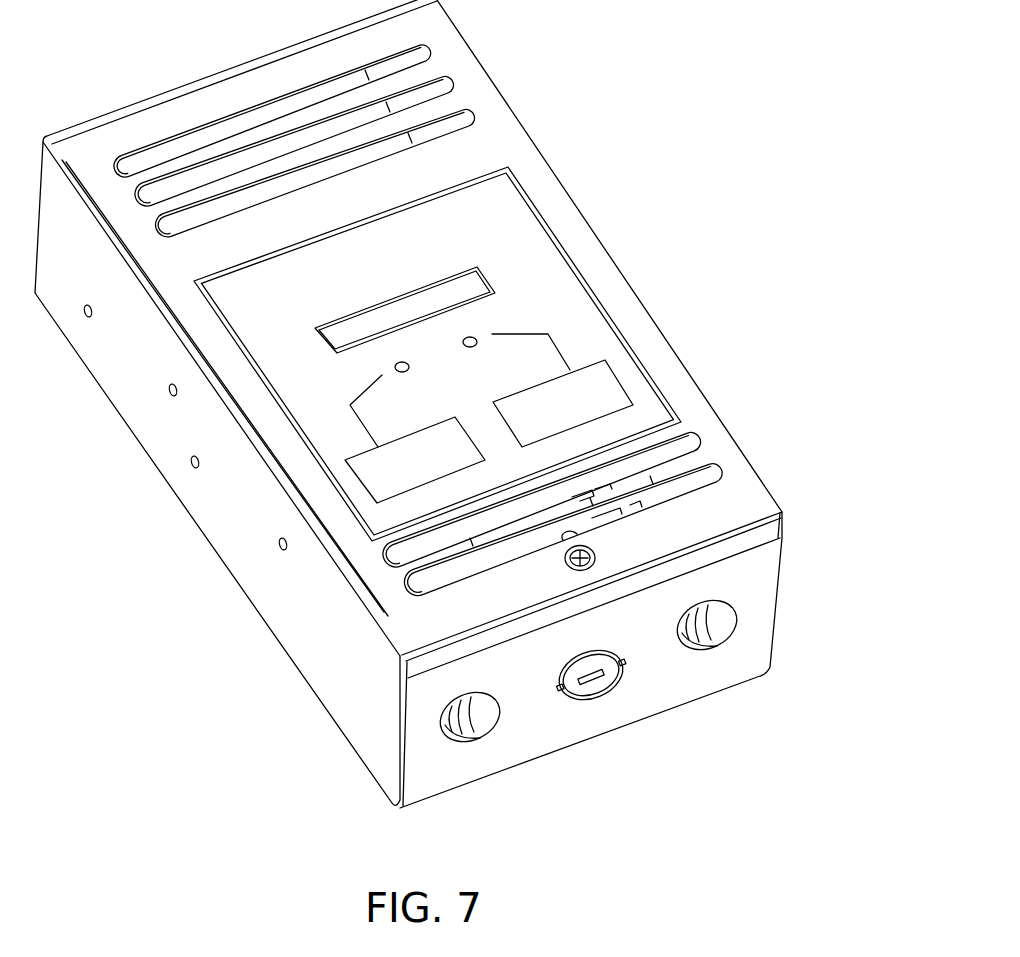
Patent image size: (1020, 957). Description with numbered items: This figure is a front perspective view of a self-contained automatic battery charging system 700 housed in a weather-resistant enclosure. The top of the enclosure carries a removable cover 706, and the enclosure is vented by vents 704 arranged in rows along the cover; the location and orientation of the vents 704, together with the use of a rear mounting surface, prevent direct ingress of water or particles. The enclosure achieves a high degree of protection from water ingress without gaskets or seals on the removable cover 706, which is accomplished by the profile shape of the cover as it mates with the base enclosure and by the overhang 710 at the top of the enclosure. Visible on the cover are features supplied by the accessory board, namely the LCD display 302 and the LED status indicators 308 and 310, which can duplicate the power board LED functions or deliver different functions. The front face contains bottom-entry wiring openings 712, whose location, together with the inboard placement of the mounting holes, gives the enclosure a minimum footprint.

The self-contained automatic battery charging system 700 is at (668, 745).
The overhang 710 is at (120, 123).
The removable cover 706 is at (530, 167).
The vents 704 is at (457, 92).
The LCD display 302 is at (478, 288).
The LED status indicator 308 is at (395, 368).
The LED status indicator 310 is at (480, 335).
The bottom-entry wiring openings 712 is at (722, 647).